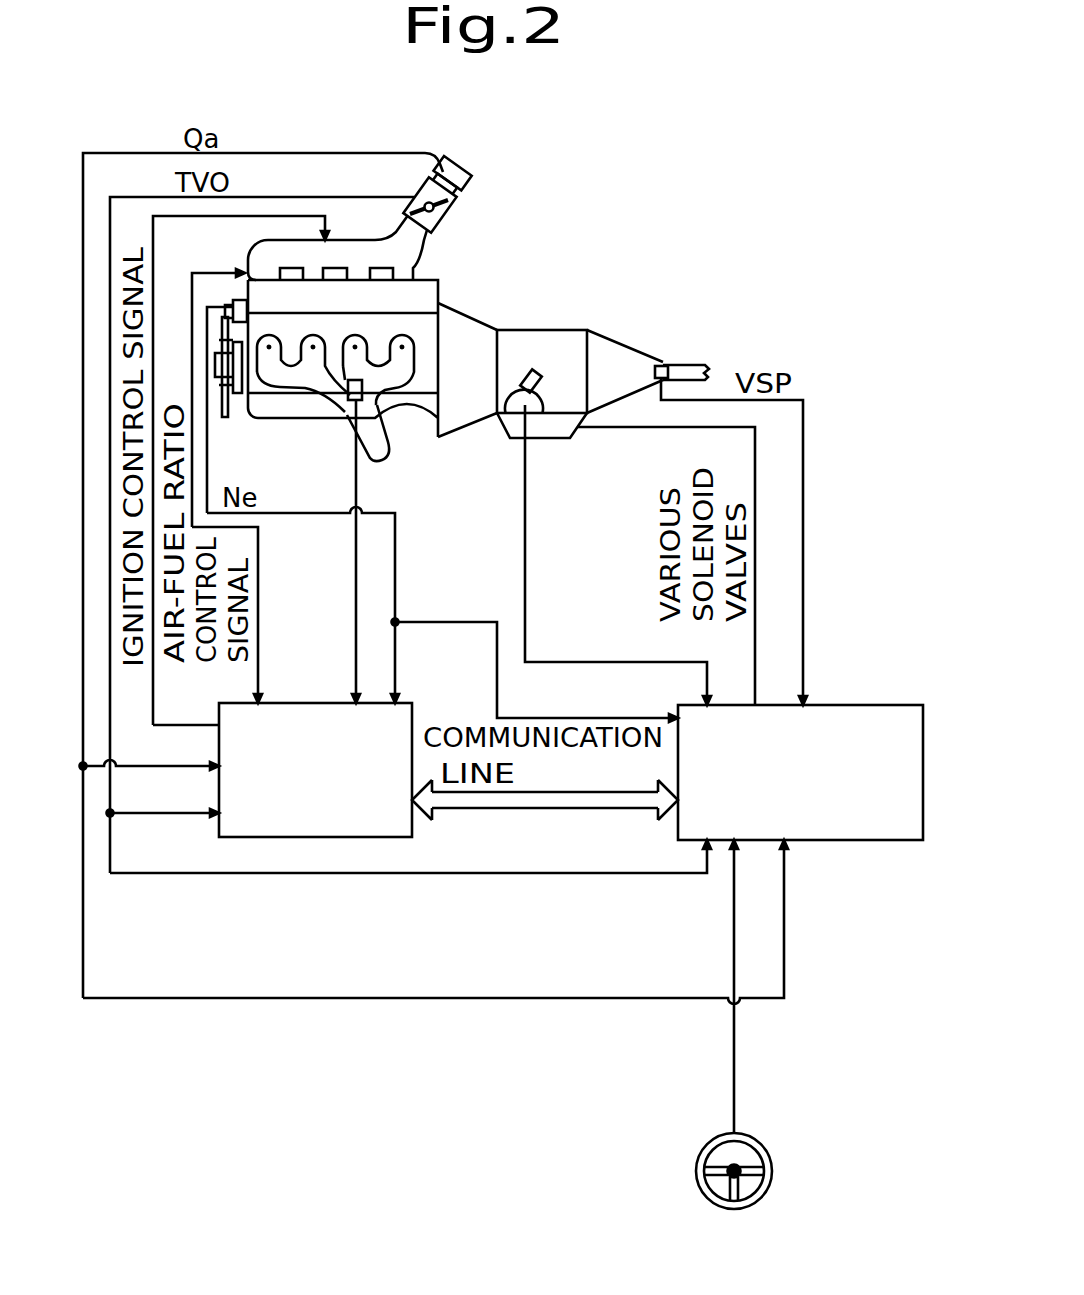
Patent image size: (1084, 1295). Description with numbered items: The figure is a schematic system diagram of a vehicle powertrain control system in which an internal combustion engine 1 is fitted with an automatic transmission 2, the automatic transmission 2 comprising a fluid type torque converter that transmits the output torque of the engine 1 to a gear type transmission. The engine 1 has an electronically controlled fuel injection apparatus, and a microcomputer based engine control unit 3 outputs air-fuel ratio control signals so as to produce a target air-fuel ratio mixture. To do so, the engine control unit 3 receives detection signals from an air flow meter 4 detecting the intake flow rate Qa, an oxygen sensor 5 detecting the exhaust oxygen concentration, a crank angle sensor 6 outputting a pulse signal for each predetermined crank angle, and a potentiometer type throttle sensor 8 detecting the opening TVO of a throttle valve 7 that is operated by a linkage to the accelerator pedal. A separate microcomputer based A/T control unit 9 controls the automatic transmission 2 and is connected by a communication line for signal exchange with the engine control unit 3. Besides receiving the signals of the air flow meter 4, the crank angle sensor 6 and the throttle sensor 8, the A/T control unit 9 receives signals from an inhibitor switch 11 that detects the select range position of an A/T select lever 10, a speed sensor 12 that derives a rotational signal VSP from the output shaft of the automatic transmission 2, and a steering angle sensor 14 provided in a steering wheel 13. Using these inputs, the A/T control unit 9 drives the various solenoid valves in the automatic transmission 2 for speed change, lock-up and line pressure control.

The internal combustion engine 1 is at (290, 441).
The automatic transmission 2 is at (568, 320).
The engine control unit 3 is at (306, 701).
The air flow meter 4 is at (472, 178).
The oxygen sensor 5 is at (348, 393).
The crank angle sensor 6 is at (223, 346).
The throttle valve 7 is at (447, 208).
The throttle sensor 8 is at (412, 184).
The A/T control unit 9 is at (814, 842).
The A/T select lever 10 is at (528, 370).
The inhibitor switch 11 is at (543, 407).
The speed sensor 12 is at (663, 363).
The steering wheel 13 is at (772, 1168).
The steering angle sensor 14 is at (727, 1165).